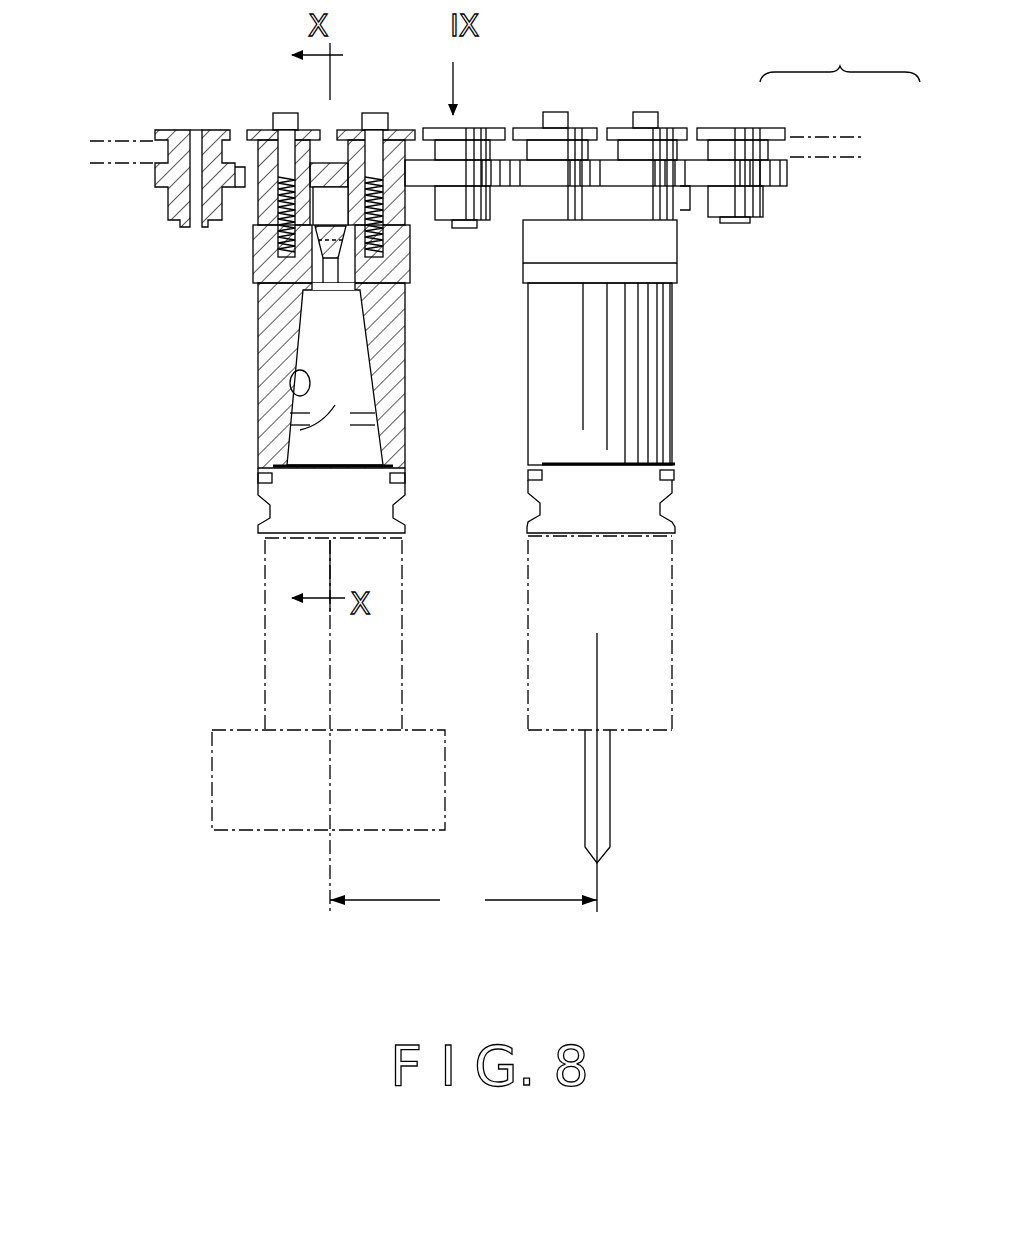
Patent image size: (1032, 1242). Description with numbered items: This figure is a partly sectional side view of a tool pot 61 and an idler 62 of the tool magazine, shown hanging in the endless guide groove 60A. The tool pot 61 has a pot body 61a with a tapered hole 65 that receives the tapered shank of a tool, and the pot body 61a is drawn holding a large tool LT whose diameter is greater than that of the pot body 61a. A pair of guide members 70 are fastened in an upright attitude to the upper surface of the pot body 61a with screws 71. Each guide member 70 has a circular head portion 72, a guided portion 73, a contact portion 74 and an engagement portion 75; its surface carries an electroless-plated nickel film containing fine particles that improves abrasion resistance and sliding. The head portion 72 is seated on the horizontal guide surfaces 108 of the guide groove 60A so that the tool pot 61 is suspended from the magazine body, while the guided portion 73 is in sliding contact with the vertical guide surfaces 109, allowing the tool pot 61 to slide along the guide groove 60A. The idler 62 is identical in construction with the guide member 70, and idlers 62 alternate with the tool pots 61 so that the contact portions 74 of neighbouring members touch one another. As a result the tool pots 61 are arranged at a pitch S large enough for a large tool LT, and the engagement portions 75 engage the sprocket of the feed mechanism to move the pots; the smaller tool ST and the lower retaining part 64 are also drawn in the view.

The endless guide groove 60A is at (840, 55).
The tool pot 61 is at (258, 377).
The pot body 61a is at (280, 340).
The idler 62 is at (172, 200).
The retaining flange 64 is at (272, 468).
The tapered hole 65 is at (290, 395).
The guide member 70 is at (315, 128).
The screw 71 is at (380, 127).
The circular head portion 72 is at (257, 128).
The guided portion 73 is at (242, 128).
The contact portion 74 is at (245, 170).
The engagement portion 75 is at (256, 226).
The horizontal guide surface 108 is at (789, 136).
The vertical guide surface 109 is at (845, 158).
The large tool LT is at (262, 595).
The stationary tool ST is at (672, 607).
The pitch S is at (463, 903).